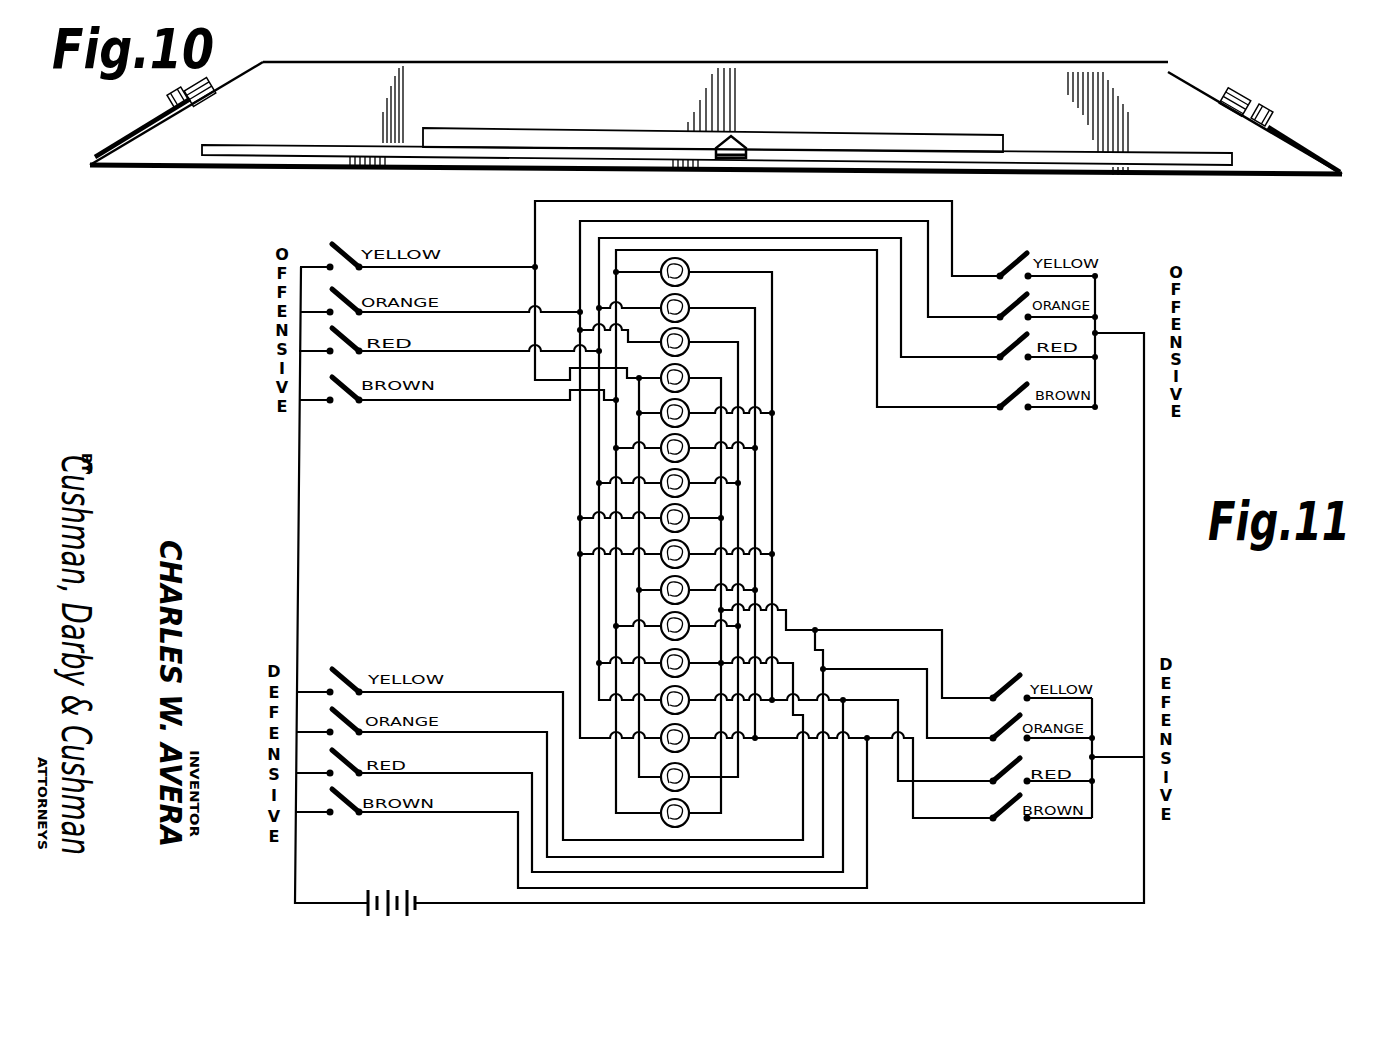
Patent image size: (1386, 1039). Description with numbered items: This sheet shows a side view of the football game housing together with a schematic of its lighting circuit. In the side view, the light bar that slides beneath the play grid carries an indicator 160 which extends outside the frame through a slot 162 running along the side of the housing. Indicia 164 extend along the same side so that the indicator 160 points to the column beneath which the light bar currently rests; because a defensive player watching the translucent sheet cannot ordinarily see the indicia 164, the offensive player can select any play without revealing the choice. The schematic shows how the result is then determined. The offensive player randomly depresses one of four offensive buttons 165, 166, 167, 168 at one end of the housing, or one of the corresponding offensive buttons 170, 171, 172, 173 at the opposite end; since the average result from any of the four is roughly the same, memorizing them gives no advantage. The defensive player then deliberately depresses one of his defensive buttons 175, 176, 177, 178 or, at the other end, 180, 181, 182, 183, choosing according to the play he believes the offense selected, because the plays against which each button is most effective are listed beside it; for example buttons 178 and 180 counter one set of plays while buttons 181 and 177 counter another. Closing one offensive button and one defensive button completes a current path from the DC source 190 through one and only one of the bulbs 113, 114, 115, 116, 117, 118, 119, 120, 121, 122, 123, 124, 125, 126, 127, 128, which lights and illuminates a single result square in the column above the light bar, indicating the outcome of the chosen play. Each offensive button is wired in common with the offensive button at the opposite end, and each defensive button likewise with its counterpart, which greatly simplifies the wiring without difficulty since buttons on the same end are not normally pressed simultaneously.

In FIG. 11, the bulb 113 is at (686, 263).
In FIG. 11, the bulb 114 is at (686, 299).
In FIG. 11, the bulb 115 is at (686, 333).
In FIG. 11, the bulb 116 is at (686, 369).
In FIG. 11, the bulb 117 is at (686, 404).
In FIG. 11, the bulb 118 is at (686, 439).
In FIG. 11, the bulb 119 is at (686, 474).
In FIG. 11, the bulb 120 is at (686, 509).
In FIG. 11, the bulb 121 is at (686, 545).
In FIG. 11, the bulb 122 is at (686, 581).
In FIG. 11, the bulb 123 is at (686, 617).
In FIG. 11, the bulb 124 is at (686, 654).
In FIG. 11, the bulb 125 is at (686, 691).
In FIG. 11, the bulb 126 is at (686, 729).
In FIG. 11, the bulb 127 is at (686, 768).
In FIG. 11, the bulb 128 is at (662, 807).
In FIG. 10, the indicator 160 is at (733, 135).
In FIG. 10, the slot 162 is at (283, 152).
In FIG. 10, the indicia 164 is at (1022, 118).
In FIG. 11, the offensive button 165 is at (353, 256).
In FIG. 11, the offensive button 166 is at (346, 296).
In FIG. 11, the offensive button 167 is at (343, 334).
In FIG. 11, the offensive button 168 is at (343, 376).
In FIG. 11, the offensive button 170 is at (1010, 270).
In FIG. 11, the offensive button 171 is at (1012, 304).
In FIG. 11, the offensive button 172 is at (1012, 348).
In FIG. 11, the offensive button 173 is at (1010, 395).
In FIG. 11, the defensive button 175 is at (1008, 680).
In FIG. 11, the defensive button 176 is at (1007, 719).
In FIG. 11, the defensive button 177 is at (1007, 764).
In FIG. 11, the defensive button 178 is at (1005, 804).
In FIG. 11, the defensive button 180 is at (353, 676).
In FIG. 11, the defensive button 181 is at (343, 717).
In FIG. 11, the defensive button 182 is at (340, 756).
In FIG. 11, the defensive button 183 is at (340, 797).
In FIG. 11, the DC source 190 is at (397, 890).